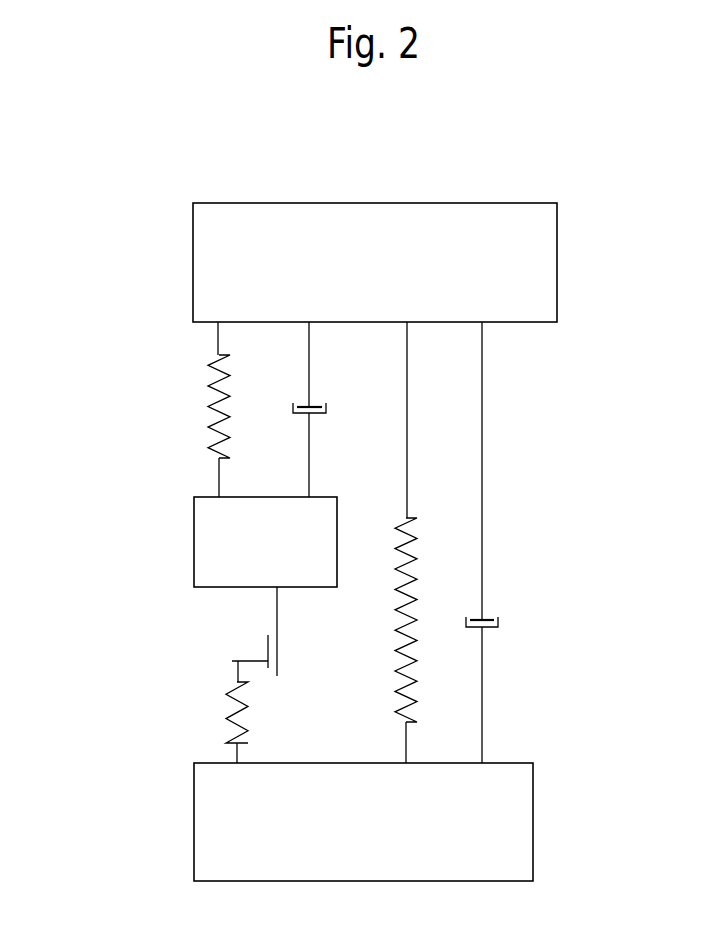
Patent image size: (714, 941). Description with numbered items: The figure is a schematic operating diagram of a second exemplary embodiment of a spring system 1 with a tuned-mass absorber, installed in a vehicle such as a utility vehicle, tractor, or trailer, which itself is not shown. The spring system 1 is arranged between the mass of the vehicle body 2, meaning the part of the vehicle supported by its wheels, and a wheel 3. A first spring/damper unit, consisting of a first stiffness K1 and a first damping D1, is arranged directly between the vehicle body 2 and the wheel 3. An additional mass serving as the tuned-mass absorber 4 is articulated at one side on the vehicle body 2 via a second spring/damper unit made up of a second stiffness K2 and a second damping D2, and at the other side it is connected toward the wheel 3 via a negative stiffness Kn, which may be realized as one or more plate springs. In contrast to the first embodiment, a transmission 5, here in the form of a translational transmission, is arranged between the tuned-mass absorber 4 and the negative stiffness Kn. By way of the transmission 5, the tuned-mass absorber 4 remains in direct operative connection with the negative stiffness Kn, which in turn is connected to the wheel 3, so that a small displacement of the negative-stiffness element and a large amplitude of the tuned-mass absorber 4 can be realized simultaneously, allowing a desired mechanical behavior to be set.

The spring system 1 is at (108, 423).
The vehicle body 2 is at (412, 225).
The wheel 3 is at (505, 783).
The tuned-mass absorber 4 is at (208, 540).
The transmission 5 is at (250, 648).
The first stiffness K1 is at (413, 520).
The second stiffness K2 is at (208, 375).
The negative stiffness Kn is at (228, 700).
The first damping D1 is at (498, 622).
The second damping D2 is at (317, 403).